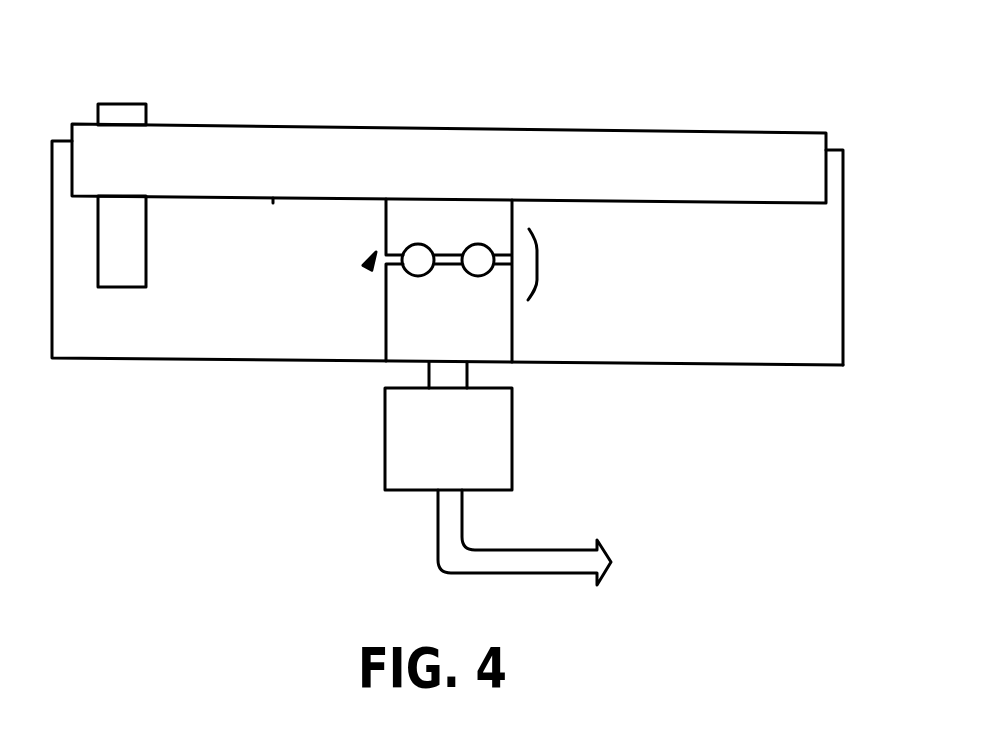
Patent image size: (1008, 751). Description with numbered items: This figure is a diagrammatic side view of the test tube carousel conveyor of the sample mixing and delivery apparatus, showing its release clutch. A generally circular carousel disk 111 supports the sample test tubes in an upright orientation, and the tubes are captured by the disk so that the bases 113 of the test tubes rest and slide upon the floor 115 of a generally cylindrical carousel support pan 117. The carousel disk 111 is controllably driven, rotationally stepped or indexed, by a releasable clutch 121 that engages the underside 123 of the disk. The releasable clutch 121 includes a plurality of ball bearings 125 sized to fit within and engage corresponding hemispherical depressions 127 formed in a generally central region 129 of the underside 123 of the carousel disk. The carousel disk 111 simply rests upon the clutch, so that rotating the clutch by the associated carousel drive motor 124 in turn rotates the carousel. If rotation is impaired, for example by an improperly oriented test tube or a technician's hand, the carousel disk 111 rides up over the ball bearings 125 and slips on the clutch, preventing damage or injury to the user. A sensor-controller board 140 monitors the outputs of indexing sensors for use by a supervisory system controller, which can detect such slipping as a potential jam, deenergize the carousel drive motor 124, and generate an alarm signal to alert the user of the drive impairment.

The carousel disk 111 is at (768, 133).
The bases of the test tubes 113 is at (120, 287).
The floor 115 is at (207, 360).
The carousel support pan 117 is at (843, 263).
The releasable clutch 121 is at (538, 268).
The underside of the disk 123 is at (273, 198).
The carousel drive motor 124 is at (428, 467).
The ball bearings 125 is at (413, 236).
The hemispherical depressions 127 is at (367, 268).
The central region 129 is at (494, 199).
The sensor-controller board 140 is at (582, 552).